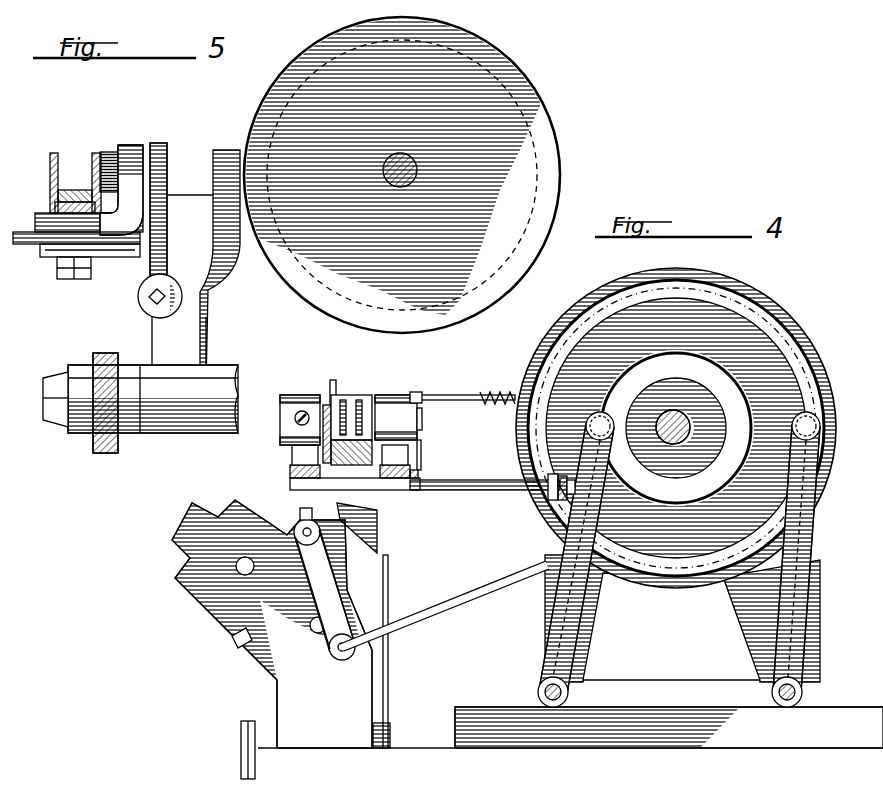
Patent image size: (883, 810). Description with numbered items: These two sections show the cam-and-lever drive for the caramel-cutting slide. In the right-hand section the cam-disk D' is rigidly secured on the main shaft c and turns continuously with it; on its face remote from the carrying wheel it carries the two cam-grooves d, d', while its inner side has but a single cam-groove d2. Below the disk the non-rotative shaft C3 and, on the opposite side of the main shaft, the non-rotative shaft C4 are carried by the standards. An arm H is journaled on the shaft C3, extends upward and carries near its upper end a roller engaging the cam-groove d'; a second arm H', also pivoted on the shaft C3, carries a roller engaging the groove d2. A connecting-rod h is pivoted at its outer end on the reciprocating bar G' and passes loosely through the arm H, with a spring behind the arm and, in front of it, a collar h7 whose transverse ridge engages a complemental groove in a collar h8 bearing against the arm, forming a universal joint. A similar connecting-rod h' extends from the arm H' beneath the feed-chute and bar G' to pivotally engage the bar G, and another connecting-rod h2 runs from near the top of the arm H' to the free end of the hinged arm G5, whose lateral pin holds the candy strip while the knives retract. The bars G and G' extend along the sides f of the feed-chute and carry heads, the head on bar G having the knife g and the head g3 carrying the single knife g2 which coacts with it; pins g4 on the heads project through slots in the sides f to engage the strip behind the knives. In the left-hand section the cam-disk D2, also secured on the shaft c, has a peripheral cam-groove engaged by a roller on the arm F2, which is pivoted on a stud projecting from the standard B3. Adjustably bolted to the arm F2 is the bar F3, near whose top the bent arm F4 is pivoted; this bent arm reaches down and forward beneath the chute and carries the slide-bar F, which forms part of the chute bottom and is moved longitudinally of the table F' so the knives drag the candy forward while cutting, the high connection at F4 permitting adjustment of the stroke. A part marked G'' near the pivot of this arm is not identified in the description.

In FIG. 5, the cam-disk D2 is at (546, 110).
In FIG. 5, the main shaft c is at (512, 166).
In FIG. 4, the main shaft c is at (673, 446).
In FIG. 5, the side of the feed-chute f is at (93, 154).
In FIG. 5, the table F' is at (72, 201).
In FIG. 4, the table F' is at (311, 482).
In FIG. 5, the bent arm F4 is at (137, 146).
In FIG. 4, the bent arm F4 is at (345, 404).
In FIG. 5, the bar F3 is at (163, 228).
In FIG. 5, the reciprocating bar G' is at (70, 255).
In FIG. 4, the reciprocating bar G' is at (433, 462).
In FIG. 5, the pivot boss G'' is at (144, 290).
In FIG. 5, the arm F2 is at (197, 343).
In FIG. 5, the standard B3 is at (140, 418).
In FIG. 4, the cam-disk D' is at (695, 428).
In FIG. 4, the cam-groove d2 is at (768, 312).
In FIG. 4, the cam-groove d' is at (686, 428).
In FIG. 4, the cam-groove d is at (728, 416).
In FIG. 4, the arm H' is at (560, 553).
In FIG. 4, the arm H is at (661, 552).
In FIG. 4, the non-rotative shaft C3 is at (540, 693).
In FIG. 4, the non-rotative shaft C4 is at (803, 693).
In FIG. 4, the connecting-rod h' is at (407, 575).
In FIG. 4, the slide-bar F is at (381, 501).
In FIG. 4, the connecting-rod h is at (485, 475).
In FIG. 4, the collar h7 is at (553, 490).
In FIG. 4, the collar h8 is at (566, 496).
In FIG. 4, the reciprocating bar G is at (325, 461).
In FIG. 4, the pin g4 is at (303, 411).
In FIG. 4, the knife g is at (350, 398).
In FIG. 4, the knife g2 is at (386, 398).
In FIG. 4, the connecting-rod h2 is at (463, 394).
In FIG. 4, the arm G5 is at (417, 423).
In FIG. 4, the head g3 is at (420, 450).